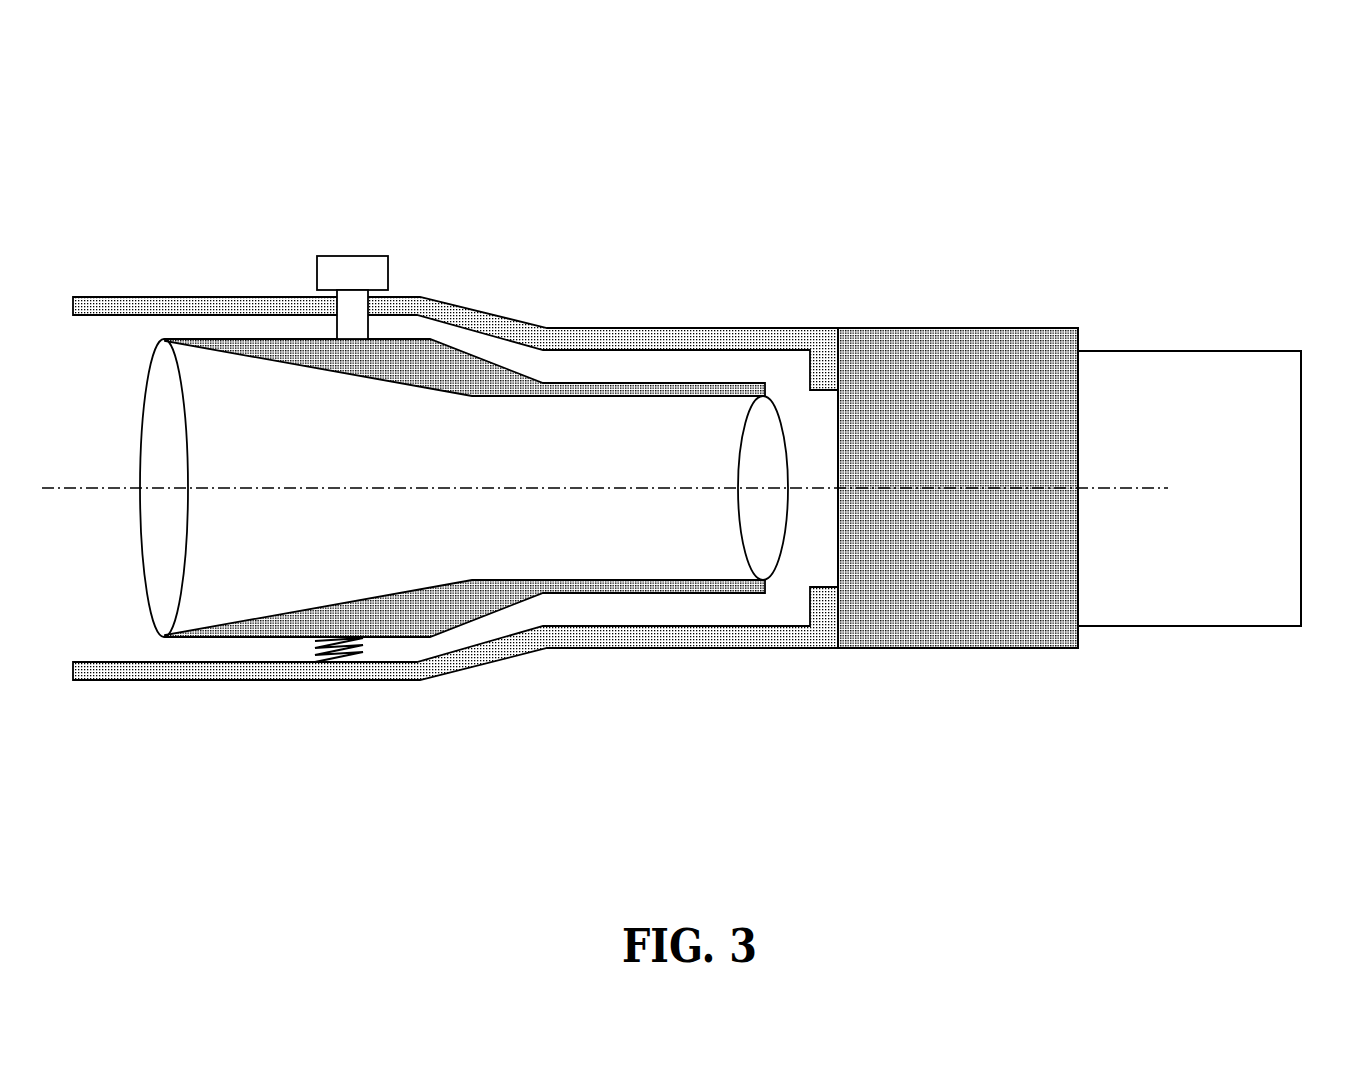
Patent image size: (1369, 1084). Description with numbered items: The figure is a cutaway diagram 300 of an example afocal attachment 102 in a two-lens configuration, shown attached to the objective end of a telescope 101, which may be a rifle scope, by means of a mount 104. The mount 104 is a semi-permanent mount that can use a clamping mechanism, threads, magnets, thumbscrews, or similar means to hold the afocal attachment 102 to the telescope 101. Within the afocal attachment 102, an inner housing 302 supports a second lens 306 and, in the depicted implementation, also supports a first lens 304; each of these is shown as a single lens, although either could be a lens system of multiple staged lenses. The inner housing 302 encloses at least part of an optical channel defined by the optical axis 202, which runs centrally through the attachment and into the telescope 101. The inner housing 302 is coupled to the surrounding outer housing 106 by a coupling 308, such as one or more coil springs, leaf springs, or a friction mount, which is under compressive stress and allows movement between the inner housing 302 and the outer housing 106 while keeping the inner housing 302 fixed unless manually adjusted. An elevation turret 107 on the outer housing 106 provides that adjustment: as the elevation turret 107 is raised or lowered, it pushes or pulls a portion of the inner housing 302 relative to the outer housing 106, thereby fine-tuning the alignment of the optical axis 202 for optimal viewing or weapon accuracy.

The telescope 101 is at (1264, 683).
The afocal attachment 102 is at (558, 420).
The mount 104 is at (1012, 627).
The outer housing 106 is at (495, 667).
The elevation turret 107 is at (352, 257).
The optical axis 202 is at (98, 487).
The cutaway diagram 300 is at (700, 472).
The inner housing 302 is at (612, 593).
The first lens 304 is at (155, 582).
The second lens 306 is at (766, 543).
The coupling 308 is at (347, 655).